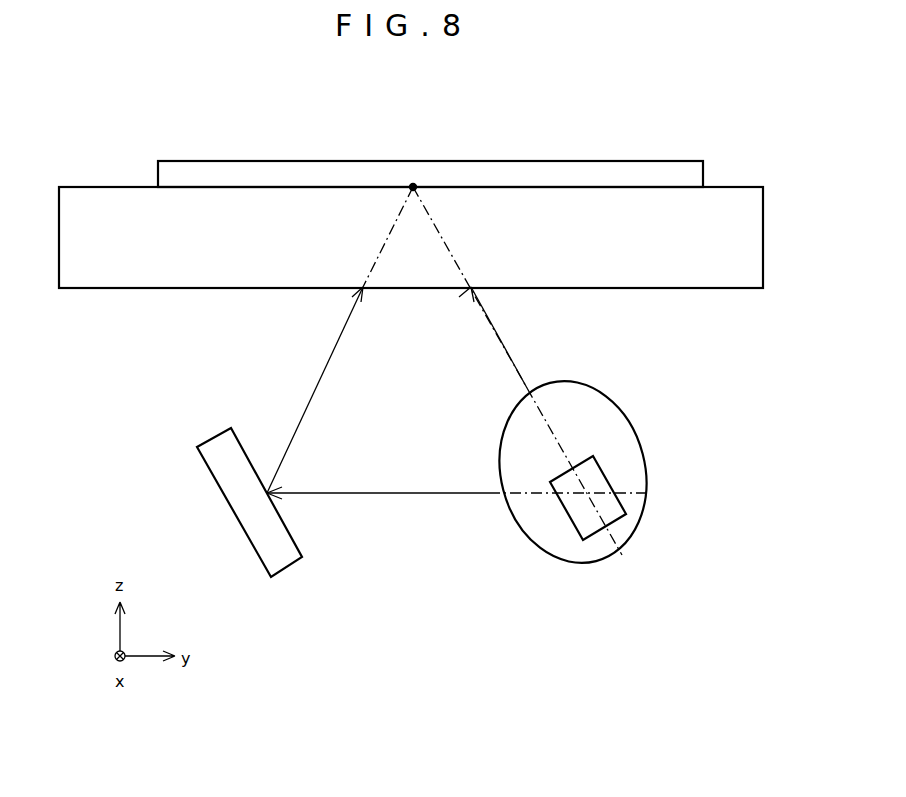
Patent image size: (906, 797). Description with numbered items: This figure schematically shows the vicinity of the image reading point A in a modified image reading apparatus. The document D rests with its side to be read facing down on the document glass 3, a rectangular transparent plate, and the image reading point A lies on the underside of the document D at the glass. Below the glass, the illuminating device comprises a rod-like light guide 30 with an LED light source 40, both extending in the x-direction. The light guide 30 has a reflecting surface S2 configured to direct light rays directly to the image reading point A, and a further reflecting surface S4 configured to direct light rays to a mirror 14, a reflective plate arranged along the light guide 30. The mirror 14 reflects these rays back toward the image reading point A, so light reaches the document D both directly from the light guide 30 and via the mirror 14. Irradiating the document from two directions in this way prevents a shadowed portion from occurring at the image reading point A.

The document glass 3 is at (690, 288).
The document D is at (641, 170).
The image reading point A is at (413, 185).
The mirror 14 is at (259, 545).
The light guide 30 is at (597, 413).
The LED light source 40 is at (580, 523).
The reflecting surface S4 is at (648, 488).
The reflecting surface S2 is at (624, 552).